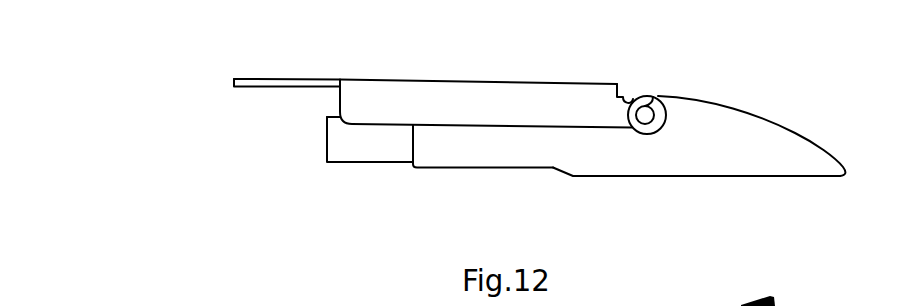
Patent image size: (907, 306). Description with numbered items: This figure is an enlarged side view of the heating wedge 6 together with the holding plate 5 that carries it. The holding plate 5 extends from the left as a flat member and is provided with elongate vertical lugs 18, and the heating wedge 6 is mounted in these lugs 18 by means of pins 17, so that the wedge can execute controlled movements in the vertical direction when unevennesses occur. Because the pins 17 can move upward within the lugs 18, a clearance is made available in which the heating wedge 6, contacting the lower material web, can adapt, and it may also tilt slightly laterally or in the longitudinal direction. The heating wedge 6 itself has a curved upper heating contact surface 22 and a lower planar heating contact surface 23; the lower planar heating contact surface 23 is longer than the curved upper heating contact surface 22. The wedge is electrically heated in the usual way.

The holding plate 5 is at (450, 98).
The heating wedge 6 is at (586, 127).
The pins 17 is at (633, 93).
The elongate vertical lugs 18 is at (650, 94).
The upper heating contact surface 22 is at (800, 133).
The lower planar heating contact surface 23 is at (677, 177).